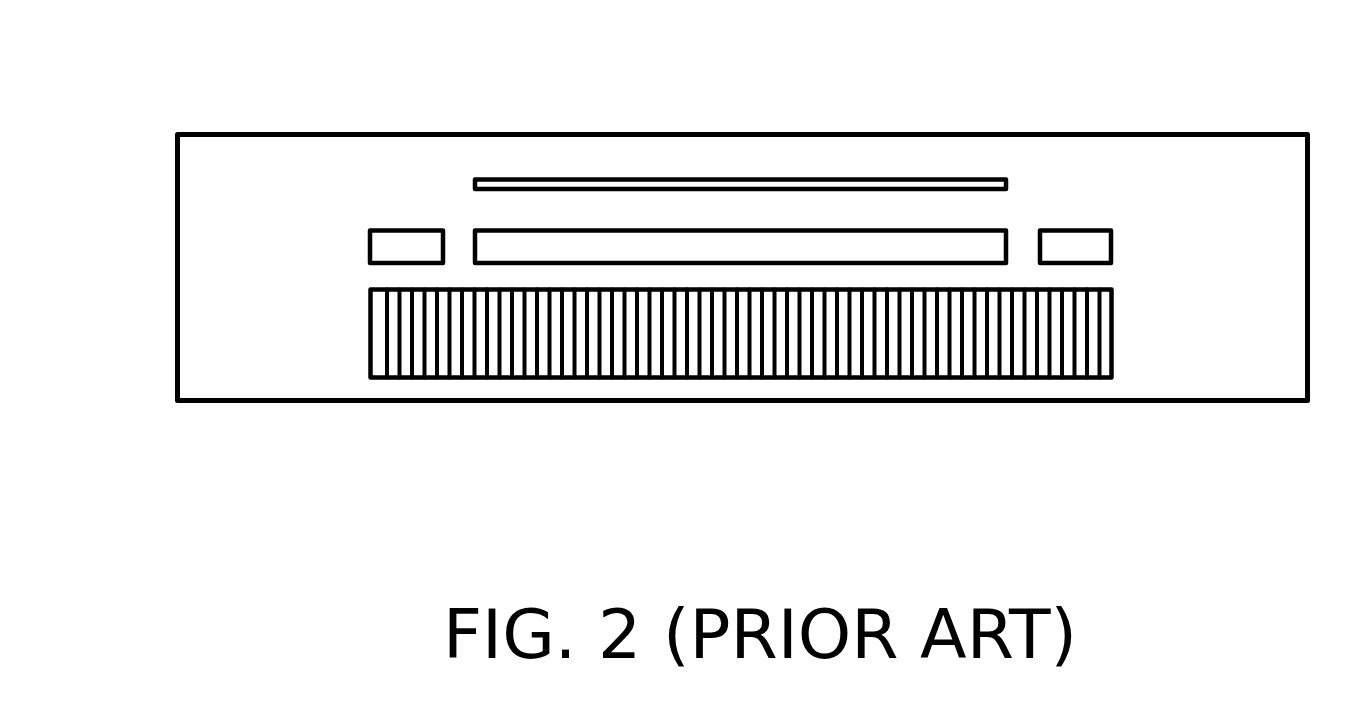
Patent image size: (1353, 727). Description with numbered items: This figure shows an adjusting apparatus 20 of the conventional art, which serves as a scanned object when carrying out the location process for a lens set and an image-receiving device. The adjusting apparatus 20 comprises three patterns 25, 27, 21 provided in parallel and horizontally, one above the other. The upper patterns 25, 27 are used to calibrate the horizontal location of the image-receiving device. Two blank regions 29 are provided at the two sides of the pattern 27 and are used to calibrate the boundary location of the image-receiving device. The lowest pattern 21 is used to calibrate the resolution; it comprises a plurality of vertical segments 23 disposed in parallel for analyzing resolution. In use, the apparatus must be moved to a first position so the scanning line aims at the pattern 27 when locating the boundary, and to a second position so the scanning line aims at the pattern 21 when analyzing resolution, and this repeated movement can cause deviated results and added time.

The adjusting apparatus 20 is at (1208, 132).
The pattern 21 is at (985, 374).
The vertical segments 23 is at (460, 365).
The pattern 25 is at (855, 177).
The pattern 27 is at (947, 250).
The blank regions 29 is at (460, 247).